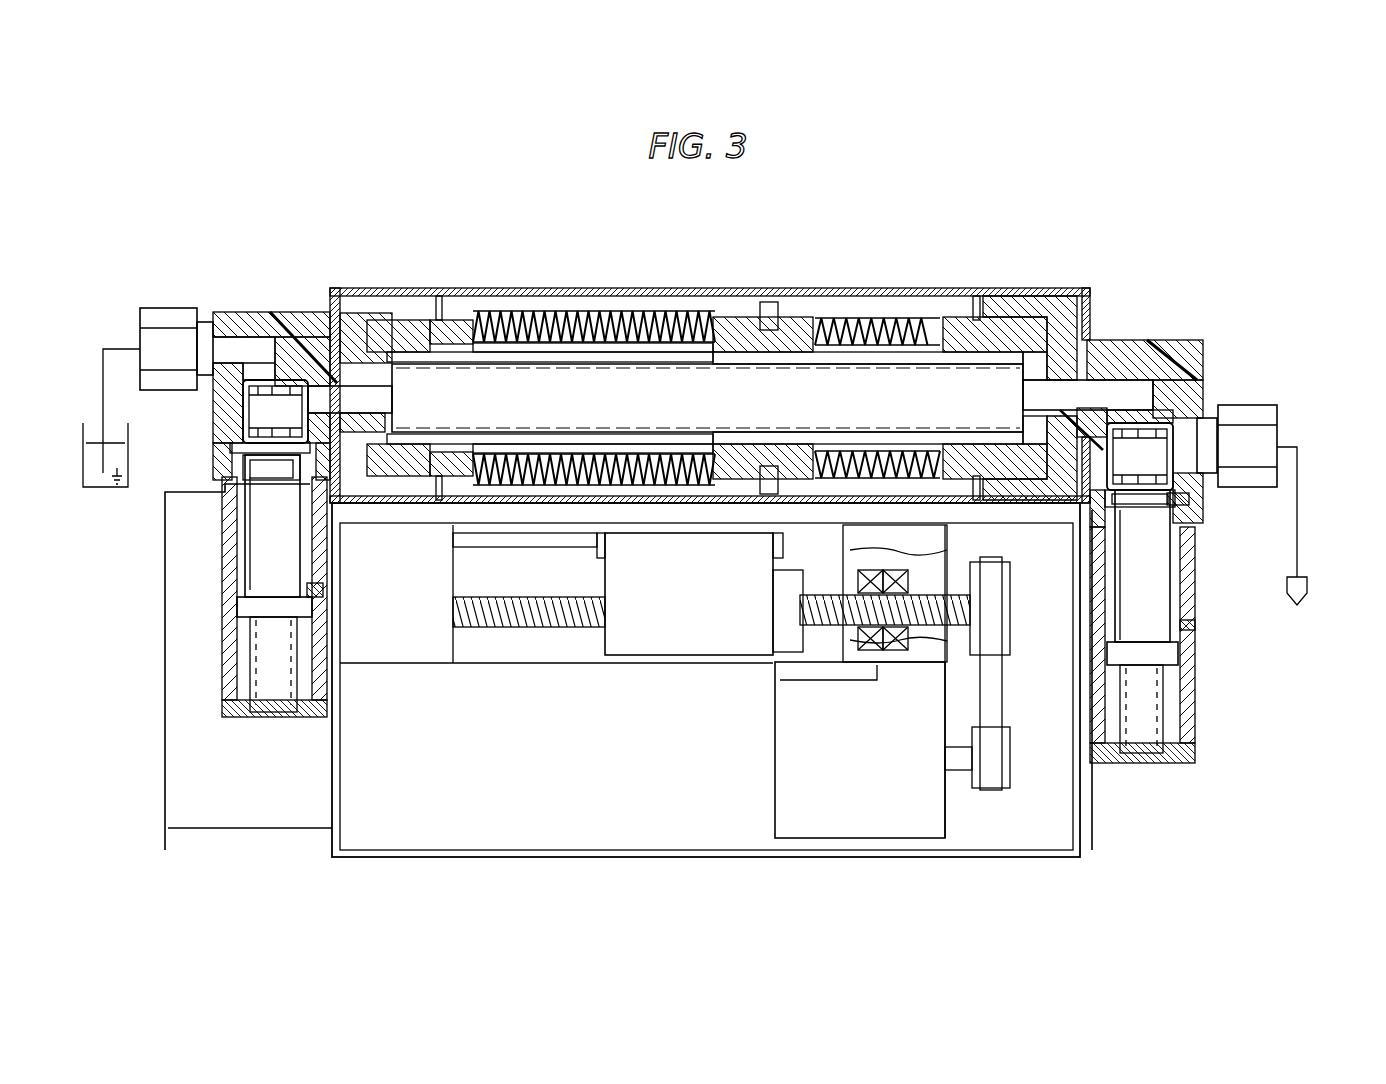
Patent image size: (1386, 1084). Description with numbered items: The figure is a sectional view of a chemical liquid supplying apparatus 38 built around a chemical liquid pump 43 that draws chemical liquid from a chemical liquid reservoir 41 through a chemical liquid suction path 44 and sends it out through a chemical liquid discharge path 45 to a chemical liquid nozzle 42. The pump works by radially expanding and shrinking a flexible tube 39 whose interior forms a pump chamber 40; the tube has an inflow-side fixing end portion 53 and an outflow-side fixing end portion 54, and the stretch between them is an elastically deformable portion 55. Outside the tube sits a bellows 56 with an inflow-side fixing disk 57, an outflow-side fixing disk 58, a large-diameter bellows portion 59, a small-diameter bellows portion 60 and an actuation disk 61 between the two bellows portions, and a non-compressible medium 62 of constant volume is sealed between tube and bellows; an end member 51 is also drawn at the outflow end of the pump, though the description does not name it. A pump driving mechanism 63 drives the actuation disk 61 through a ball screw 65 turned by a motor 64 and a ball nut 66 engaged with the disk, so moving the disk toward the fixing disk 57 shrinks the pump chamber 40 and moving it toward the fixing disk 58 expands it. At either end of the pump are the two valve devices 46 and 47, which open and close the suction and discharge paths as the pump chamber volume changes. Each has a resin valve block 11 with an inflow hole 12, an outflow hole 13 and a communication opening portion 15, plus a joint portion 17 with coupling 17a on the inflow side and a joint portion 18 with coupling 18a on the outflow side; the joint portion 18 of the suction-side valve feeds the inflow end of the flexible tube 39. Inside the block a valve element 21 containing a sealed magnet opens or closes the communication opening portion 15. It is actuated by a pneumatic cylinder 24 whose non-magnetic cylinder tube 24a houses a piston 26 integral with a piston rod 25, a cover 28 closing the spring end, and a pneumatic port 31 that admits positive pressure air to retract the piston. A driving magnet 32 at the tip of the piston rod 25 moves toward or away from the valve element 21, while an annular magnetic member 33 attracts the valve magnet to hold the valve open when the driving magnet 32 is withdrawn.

The valve block 11 is at (243, 322).
The inflow hole 12 is at (240, 360).
The outflow hole 13 is at (370, 397).
The communication opening portion 15 is at (282, 368).
The joint portion 17 is at (206, 322).
The coupling 17a is at (178, 308).
The joint portion 18 is at (1210, 442).
The coupling 18a is at (1245, 408).
The valve element 21 is at (263, 407).
The pneumatic cylinder 24 is at (213, 698).
The cylinder tube 24a is at (228, 617).
The piston rod 25 is at (272, 568).
The piston 26 is at (290, 610).
The cover 28 is at (243, 708).
The pneumatic port 31 is at (320, 588).
The driving magnet 32 is at (270, 462).
The magnetic member 33 is at (243, 453).
The chemical liquid supplying apparatus 38 is at (1155, 276).
The flexible tube 39 is at (803, 366).
The pump chamber 40 is at (943, 413).
The chemical liquid reservoir 41 is at (95, 490).
The chemical liquid nozzle 42 is at (1308, 592).
The chemical liquid pump 43 is at (889, 286).
The chemical liquid suction path 44 is at (102, 378).
The chemical liquid discharge path 45 is at (1300, 530).
The valve device 46 is at (273, 300).
The valve device 47 is at (1190, 325).
The end plate 51 is at (1058, 370).
The inflow-side fixing end portion 53 is at (400, 340).
The outflow-side fixing end portion 54 is at (1020, 310).
The elastically deformable portion 55 is at (660, 363).
The bellows 56 is at (562, 318).
The inflow-side fixing disk 57 is at (445, 320).
The outflow-side fixing disk 58 is at (975, 335).
The large-diameter bellows portion 59 is at (638, 318).
The small-diameter bellows portion 60 is at (862, 328).
The actuation disk 61 is at (743, 328).
The non-compressible medium 62 is at (593, 443).
The pump driving mechanism 63 is at (682, 696).
The motor 64 is at (830, 786).
The ball screw 65 is at (527, 628).
The ball nut 66 is at (633, 616).